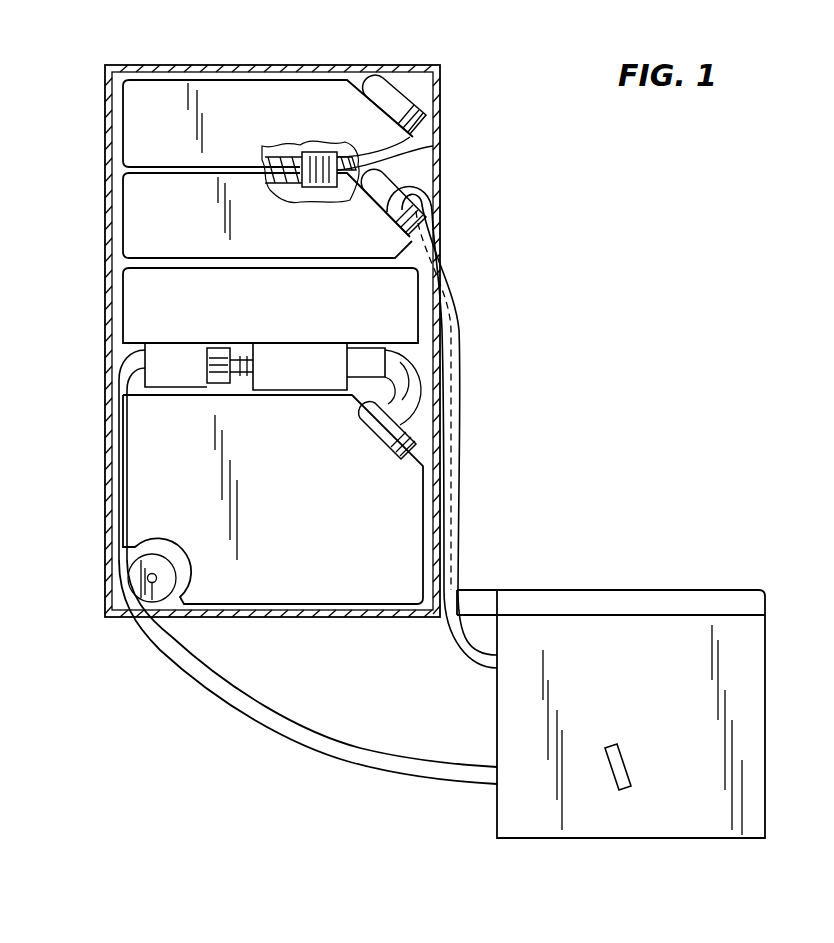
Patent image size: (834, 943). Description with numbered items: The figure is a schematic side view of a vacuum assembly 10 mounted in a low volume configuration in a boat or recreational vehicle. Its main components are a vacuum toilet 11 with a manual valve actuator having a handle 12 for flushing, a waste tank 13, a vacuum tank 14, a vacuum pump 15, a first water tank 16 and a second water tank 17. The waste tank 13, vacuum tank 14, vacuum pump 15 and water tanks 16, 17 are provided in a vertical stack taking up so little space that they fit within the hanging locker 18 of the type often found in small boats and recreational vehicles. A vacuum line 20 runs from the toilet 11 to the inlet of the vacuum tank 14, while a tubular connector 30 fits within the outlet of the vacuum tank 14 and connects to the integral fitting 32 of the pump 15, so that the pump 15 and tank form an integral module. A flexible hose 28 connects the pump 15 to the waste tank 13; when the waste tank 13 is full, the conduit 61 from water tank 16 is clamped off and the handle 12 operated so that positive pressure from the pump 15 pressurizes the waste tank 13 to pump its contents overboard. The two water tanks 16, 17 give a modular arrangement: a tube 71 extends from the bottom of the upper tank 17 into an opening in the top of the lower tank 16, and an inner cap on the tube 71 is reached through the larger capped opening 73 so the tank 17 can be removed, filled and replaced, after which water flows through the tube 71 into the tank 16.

The vacuum assembly 10 is at (648, 290).
The vacuum toilet 11 is at (758, 657).
The handle 12 is at (617, 770).
The waste tank 13 is at (407, 524).
The vacuum tank 14 is at (438, 349).
The vacuum pump 15 is at (332, 358).
The first water tank 16 is at (432, 198).
The second water tank 17 is at (321, 90).
The hanging locker 18 is at (440, 110).
The vacuum line 20 is at (318, 754).
The flexible hose 28 is at (120, 393).
The tubular connector 30 is at (205, 368).
The integral fitting 32 is at (245, 358).
The conduit 61 is at (444, 328).
The tube 71 is at (433, 146).
The capped opening 73 is at (414, 90).